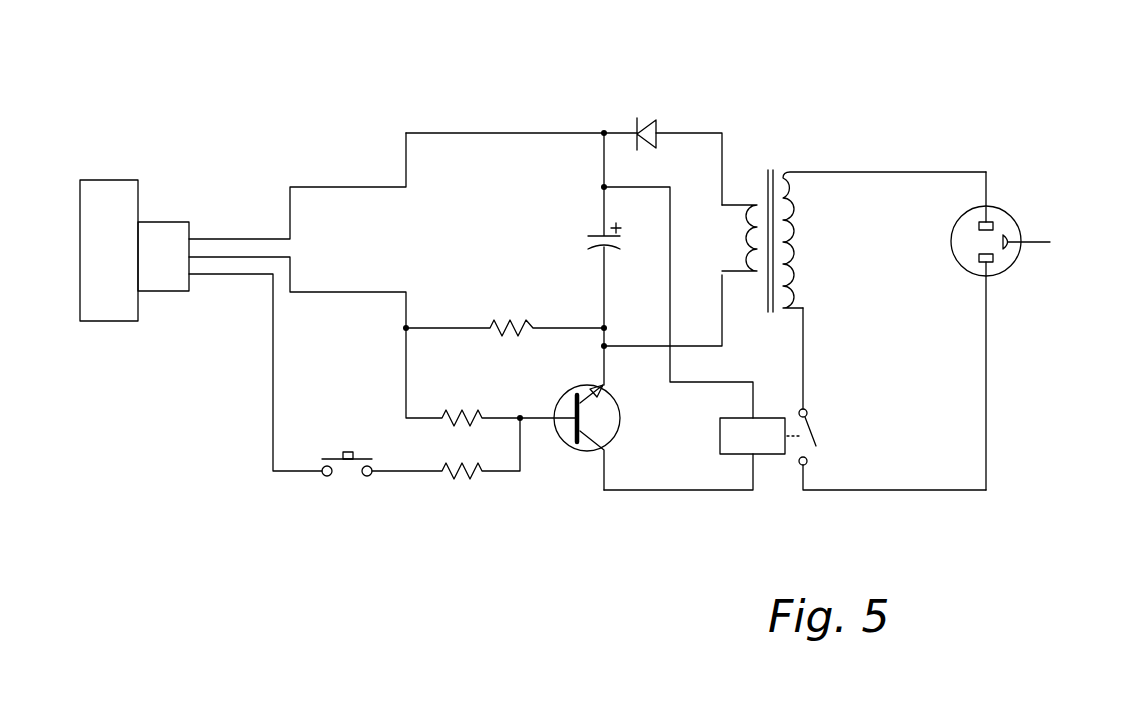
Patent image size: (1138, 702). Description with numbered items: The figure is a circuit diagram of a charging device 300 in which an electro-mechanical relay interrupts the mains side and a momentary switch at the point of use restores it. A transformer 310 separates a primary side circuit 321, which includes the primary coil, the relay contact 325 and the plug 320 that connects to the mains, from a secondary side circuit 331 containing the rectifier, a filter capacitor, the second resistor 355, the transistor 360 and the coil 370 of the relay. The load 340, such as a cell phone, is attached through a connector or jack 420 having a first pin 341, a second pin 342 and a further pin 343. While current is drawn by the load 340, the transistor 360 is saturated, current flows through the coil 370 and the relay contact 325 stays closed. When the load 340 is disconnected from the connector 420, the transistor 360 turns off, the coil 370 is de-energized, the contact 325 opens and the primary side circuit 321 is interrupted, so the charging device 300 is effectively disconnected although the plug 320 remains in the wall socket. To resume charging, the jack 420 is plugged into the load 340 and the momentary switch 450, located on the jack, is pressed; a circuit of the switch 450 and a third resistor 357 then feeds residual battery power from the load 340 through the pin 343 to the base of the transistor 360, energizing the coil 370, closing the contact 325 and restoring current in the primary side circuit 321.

The charging device 300 is at (843, 90).
The transformer 310 is at (787, 158).
The plug 320 is at (1015, 228).
The primary side circuit 321 is at (988, 421).
The relay contact 325 is at (835, 450).
The secondary side circuit 331 is at (470, 132).
The load 340 is at (102, 180).
The first pin 341 is at (233, 238).
The second pin 342 is at (273, 257).
The pin 343 is at (197, 277).
The second resistor 355 is at (473, 408).
The third resistor 357 is at (465, 482).
The transistor 360 is at (567, 450).
The coil 370 is at (720, 422).
The connector or jack 420 is at (170, 220).
The momentary switch 450 is at (345, 496).